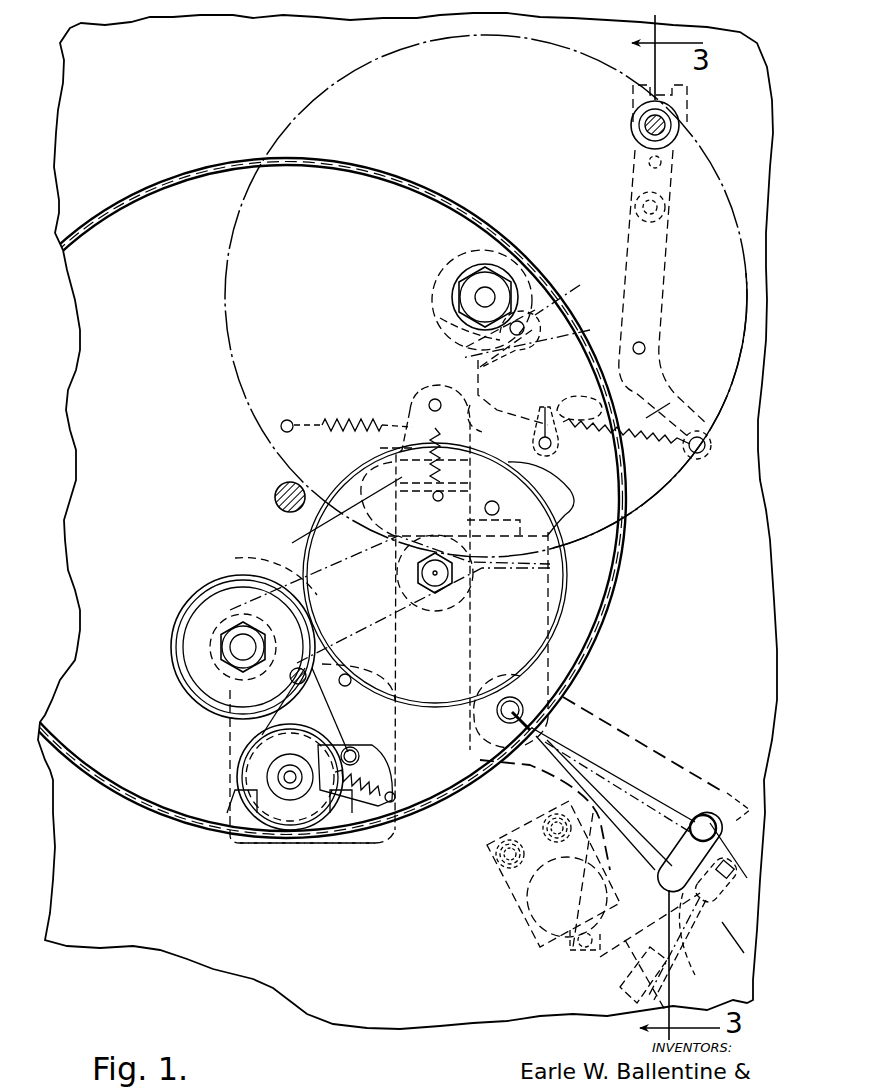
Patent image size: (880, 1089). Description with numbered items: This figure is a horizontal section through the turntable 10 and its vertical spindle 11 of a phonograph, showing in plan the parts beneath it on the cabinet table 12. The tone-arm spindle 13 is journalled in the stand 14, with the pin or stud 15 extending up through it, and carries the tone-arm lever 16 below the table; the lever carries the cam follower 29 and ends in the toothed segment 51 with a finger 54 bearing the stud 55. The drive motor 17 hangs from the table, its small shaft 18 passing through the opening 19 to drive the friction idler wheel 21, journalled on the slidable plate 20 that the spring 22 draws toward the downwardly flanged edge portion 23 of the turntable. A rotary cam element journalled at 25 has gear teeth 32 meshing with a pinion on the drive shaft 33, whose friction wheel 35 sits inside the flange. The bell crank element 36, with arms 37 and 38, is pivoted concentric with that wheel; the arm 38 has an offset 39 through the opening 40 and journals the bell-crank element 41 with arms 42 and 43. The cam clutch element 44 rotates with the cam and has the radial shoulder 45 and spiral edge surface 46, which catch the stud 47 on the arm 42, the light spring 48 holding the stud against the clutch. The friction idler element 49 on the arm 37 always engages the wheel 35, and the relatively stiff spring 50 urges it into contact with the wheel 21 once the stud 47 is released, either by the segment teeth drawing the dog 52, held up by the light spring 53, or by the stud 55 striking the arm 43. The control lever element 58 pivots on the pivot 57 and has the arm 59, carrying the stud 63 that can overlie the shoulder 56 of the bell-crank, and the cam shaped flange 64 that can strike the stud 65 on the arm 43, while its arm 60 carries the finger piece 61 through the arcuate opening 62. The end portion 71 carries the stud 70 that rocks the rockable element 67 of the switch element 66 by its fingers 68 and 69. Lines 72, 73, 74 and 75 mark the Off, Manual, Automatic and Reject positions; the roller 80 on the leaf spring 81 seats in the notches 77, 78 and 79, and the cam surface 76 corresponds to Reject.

The turntable 10 is at (120, 793).
The vertical spindle 11 is at (274, 497).
The cabinet table 12 is at (262, 956).
The tone-arm spindle 13 is at (668, 124).
The stand 14 is at (682, 133).
The pin or stud 15 is at (647, 126).
The tone-arm lever 16 is at (675, 261).
The drive motor 17 is at (228, 770).
The small shaft 18 is at (360, 755).
The opening 19 is at (393, 778).
The small plate 20 is at (335, 805).
The friction idler wheel 21 is at (262, 788).
The spring 22 is at (372, 815).
The edge portion 23 is at (614, 592).
The journal 25 is at (480, 297).
The cam follower 29 is at (647, 348).
The gear teeth 32 is at (650, 503).
The drive shaft 33 is at (435, 590).
The friction wheel 35 is at (570, 616).
The bell crank element 36 is at (380, 553).
The arm 37 is at (262, 560).
The arm 38 is at (348, 588).
The offset 39 is at (378, 460).
The opening 40 is at (500, 512).
The bell-crank element 41 is at (514, 369).
The arm 42 is at (542, 338).
The arm 43 is at (503, 381).
The cam clutch element 44 is at (448, 319).
The radial shoulder 45 is at (466, 344).
The spiral edge surface 46 is at (450, 283).
The stud 47 is at (547, 319).
The light spring 48 is at (398, 449).
The friction idler element 49 is at (206, 611).
The relatively stiff spring 50 is at (346, 421).
The segment 51 is at (670, 400).
The dog 52 is at (623, 420).
The light spring 53 is at (558, 442).
The finger 54 is at (705, 439).
The stud 55 is at (704, 454).
The shoulder 56 is at (505, 518).
The pivot 57 is at (518, 702).
The control lever or arm element 58 is at (556, 668).
The arm 59 is at (553, 570).
The arm 60 is at (650, 743).
The finger piece 61 is at (660, 878).
The arcuate opening 62 is at (687, 825).
The stud 63 is at (490, 500).
The cam shaped flange 64 is at (444, 607).
The stud 65 is at (553, 456).
The switch element 66 is at (497, 886).
The rockable element 67 is at (522, 920).
The finger 68 is at (575, 953).
The finger 69 is at (600, 921).
The stud 70 is at (578, 960).
The end portion 71 is at (604, 960).
The line 72 is at (723, 847).
The line 73 is at (720, 864).
The line 74 is at (738, 883).
The line 75 is at (722, 933).
The cam surface 76 is at (730, 813).
The notch 77 is at (662, 887).
The notch 78 is at (658, 858).
The notch 79 is at (660, 847).
The roller 80 is at (683, 948).
The leaf spring 81 is at (670, 975).